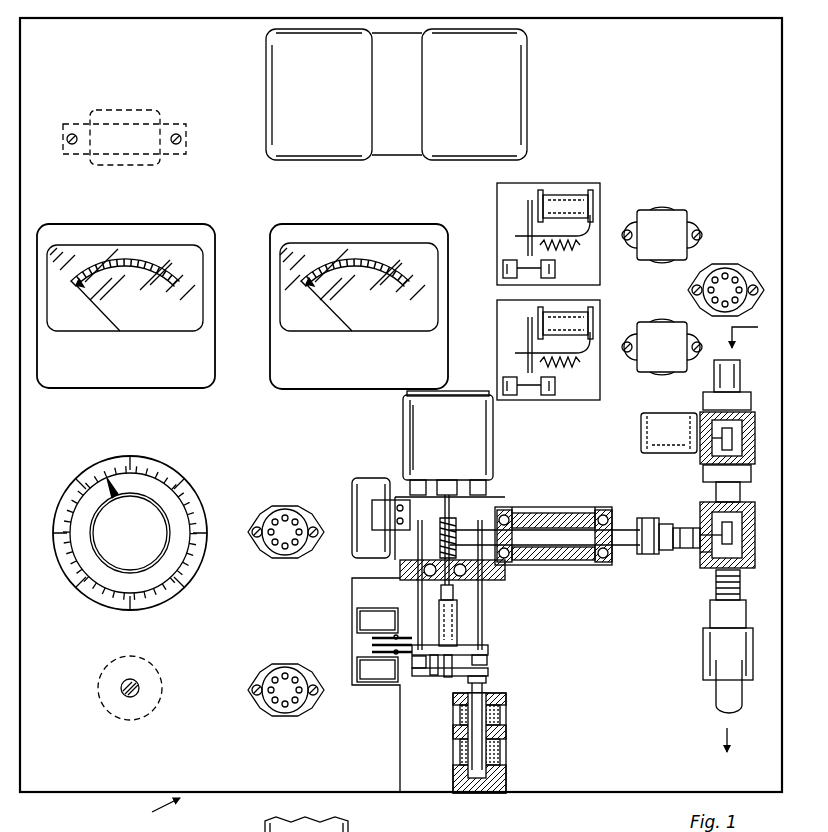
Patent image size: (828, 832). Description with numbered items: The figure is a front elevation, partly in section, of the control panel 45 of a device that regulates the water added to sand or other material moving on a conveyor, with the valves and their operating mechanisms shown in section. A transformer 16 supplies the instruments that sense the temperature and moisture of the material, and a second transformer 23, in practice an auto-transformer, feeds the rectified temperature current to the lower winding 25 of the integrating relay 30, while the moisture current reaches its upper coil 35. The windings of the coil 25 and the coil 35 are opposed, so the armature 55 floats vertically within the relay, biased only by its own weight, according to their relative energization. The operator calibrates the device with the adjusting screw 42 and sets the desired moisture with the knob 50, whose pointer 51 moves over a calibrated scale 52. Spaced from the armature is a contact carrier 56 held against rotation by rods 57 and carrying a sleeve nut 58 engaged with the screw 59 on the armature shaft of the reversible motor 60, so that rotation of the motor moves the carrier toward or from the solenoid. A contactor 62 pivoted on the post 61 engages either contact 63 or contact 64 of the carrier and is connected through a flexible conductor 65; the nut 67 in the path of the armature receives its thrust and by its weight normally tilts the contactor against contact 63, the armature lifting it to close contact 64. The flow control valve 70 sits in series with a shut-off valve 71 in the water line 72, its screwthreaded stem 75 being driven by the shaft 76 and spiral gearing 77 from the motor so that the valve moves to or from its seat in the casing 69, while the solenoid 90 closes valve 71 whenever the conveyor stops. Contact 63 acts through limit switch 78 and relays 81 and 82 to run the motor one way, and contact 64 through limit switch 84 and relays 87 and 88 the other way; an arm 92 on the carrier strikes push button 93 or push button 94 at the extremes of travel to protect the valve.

The transformer 16 is at (268, 86).
The transformer 23 is at (140, 112).
The lower winding 25 is at (500, 752).
The integrating relay 30 is at (511, 740).
The upper coil 35 is at (500, 714).
The adjusting screw 42 is at (140, 688).
The panel 45 is at (149, 812).
The knob 50 is at (130, 533).
The pointer 51 is at (115, 490).
The scale 52 is at (193, 512).
The armature 55 is at (500, 698).
The contact carrier 56 is at (488, 650).
The rods 57 is at (485, 590).
The sleeve nut 58 is at (458, 625).
The screw 59 is at (440, 592).
The reversible motor 60 is at (412, 433).
The post 61 is at (450, 680).
The contactor 62 is at (488, 672).
The contact 63 is at (418, 662).
The contact 64 is at (488, 660).
The flexible conductor 65 is at (436, 676).
The nut 67 is at (486, 680).
The casing 69 is at (706, 562).
The flow control valve 70 is at (732, 540).
The valve 71 is at (730, 432).
The water line 72 is at (718, 700).
The screwthreaded stem 75 is at (665, 548).
The shaft 76 is at (630, 528).
The spiral gearing 77 is at (454, 530).
The limit switch 78 is at (370, 680).
The relay 81 is at (565, 205).
The relay 82 is at (672, 225).
The limit switch 84 is at (375, 614).
The relay 87 is at (588, 318).
The relay 88 is at (673, 340).
The solenoid 90 is at (672, 428).
The arm 92 is at (372, 645).
The push button 93 is at (372, 652).
The push button 94 is at (372, 638).